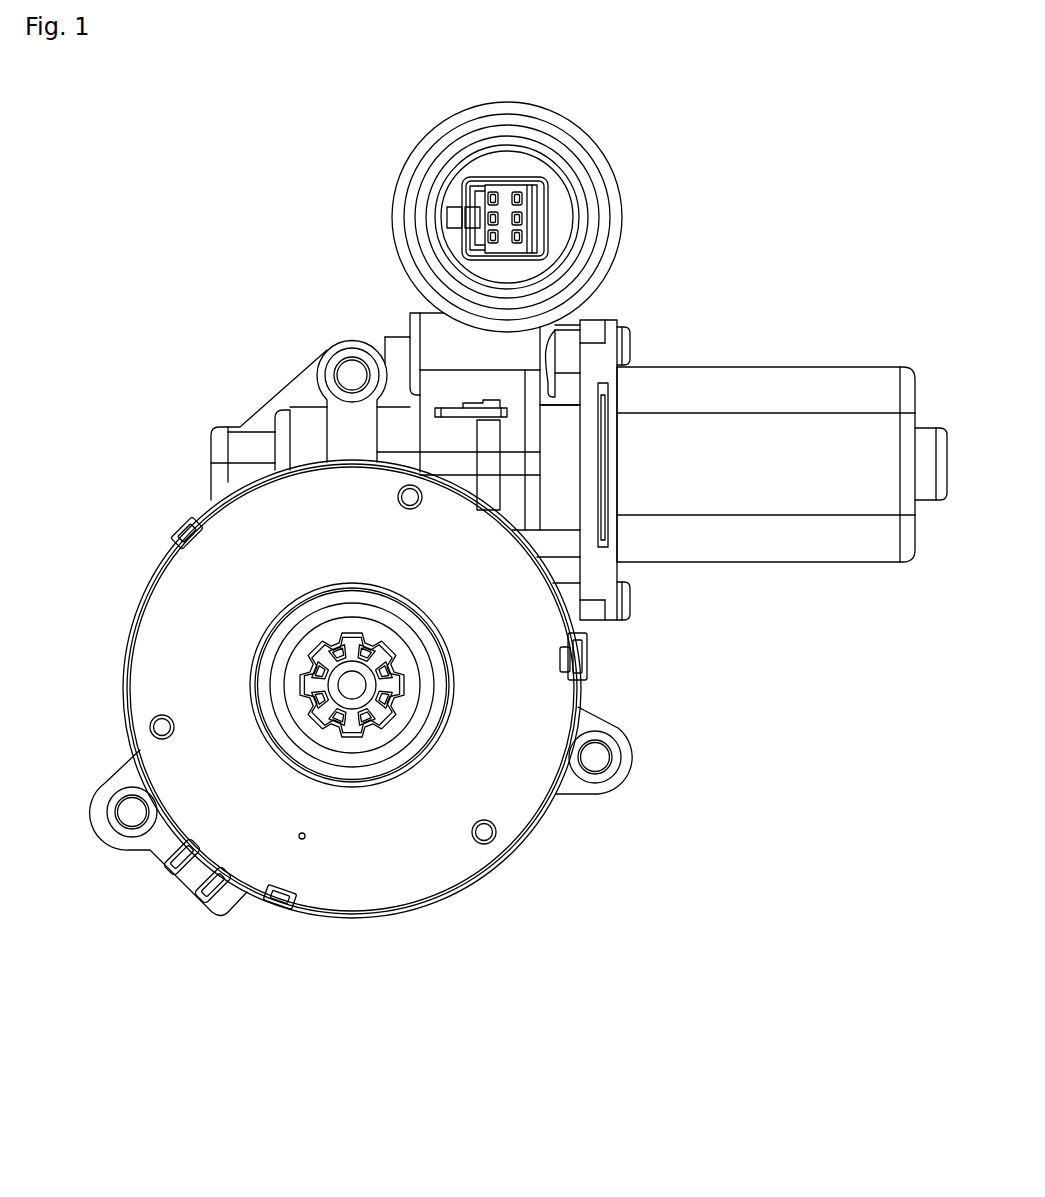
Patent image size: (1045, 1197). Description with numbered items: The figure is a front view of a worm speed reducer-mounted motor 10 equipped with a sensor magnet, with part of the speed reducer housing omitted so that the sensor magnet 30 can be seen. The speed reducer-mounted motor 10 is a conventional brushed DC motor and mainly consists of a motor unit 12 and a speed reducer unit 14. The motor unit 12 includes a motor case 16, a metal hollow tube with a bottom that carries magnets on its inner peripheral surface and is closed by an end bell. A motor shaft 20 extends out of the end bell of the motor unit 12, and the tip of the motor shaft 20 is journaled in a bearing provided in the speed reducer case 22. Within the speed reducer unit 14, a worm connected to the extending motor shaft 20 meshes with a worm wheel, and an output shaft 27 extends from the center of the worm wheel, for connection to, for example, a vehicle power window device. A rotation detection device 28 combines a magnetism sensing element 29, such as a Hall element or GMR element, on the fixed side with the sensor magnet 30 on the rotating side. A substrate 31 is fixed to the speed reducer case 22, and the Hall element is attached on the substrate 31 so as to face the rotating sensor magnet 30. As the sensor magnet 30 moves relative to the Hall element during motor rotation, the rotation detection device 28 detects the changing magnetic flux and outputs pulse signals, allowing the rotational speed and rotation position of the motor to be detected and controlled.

The speed reducer-mounted motor 10 is at (533, 1072).
The motor unit 12 is at (740, 340).
The speed reducer unit 14 is at (165, 489).
The motor case 16 is at (851, 366).
The motor shaft 20 is at (517, 477).
The speed reducer case 22 is at (246, 416).
The output shaft 27 is at (368, 740).
The rotation detection device 28 is at (517, 413).
The magnetism sensing element 29 is at (487, 400).
The sensor magnet 30 is at (477, 443).
The substrate 31 is at (453, 402).